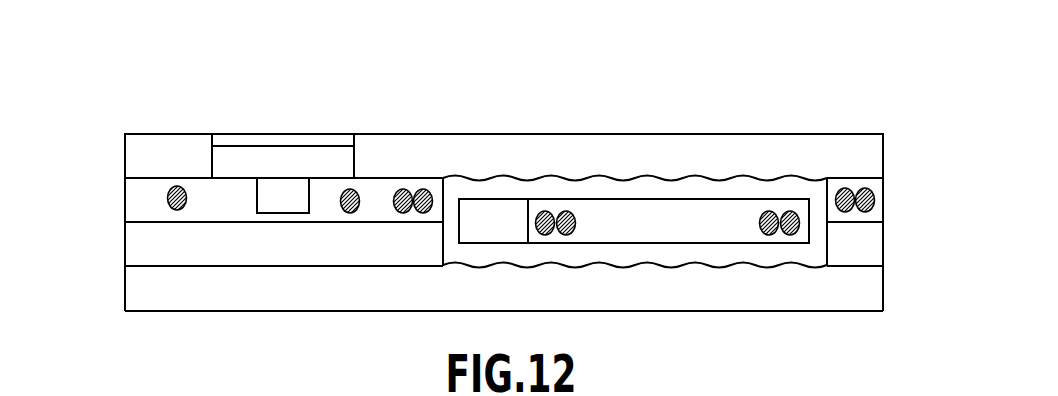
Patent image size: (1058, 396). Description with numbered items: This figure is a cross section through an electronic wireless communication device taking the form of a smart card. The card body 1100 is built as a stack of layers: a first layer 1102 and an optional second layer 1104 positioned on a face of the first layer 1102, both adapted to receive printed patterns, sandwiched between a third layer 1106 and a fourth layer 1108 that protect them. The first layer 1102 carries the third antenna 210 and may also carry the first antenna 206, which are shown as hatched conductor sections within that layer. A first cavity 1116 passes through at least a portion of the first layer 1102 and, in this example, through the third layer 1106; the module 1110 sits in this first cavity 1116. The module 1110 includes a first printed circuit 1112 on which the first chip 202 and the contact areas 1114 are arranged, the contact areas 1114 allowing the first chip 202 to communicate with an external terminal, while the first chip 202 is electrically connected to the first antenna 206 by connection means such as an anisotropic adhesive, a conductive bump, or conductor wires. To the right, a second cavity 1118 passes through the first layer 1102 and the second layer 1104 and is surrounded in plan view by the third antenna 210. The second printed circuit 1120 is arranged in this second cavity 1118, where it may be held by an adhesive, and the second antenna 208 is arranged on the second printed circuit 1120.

The card body 1100 is at (884, 161).
The first layer 1102 is at (125, 198).
The second layer 1104 is at (125, 245).
The third layer 1106 is at (124, 155).
The fourth layer 1108 is at (125, 286).
The module 1110 is at (306, 127).
The first printed circuit 1112 is at (328, 158).
The contact areas 1114 is at (263, 140).
The first cavity 1116 is at (210, 156).
The second cavity 1118 is at (678, 190).
The second printed circuit 1120 is at (707, 227).
The first chip 202 is at (275, 203).
The first antenna 206 is at (343, 212).
The second antenna 208 is at (568, 210).
The third antenna 210 is at (425, 213).